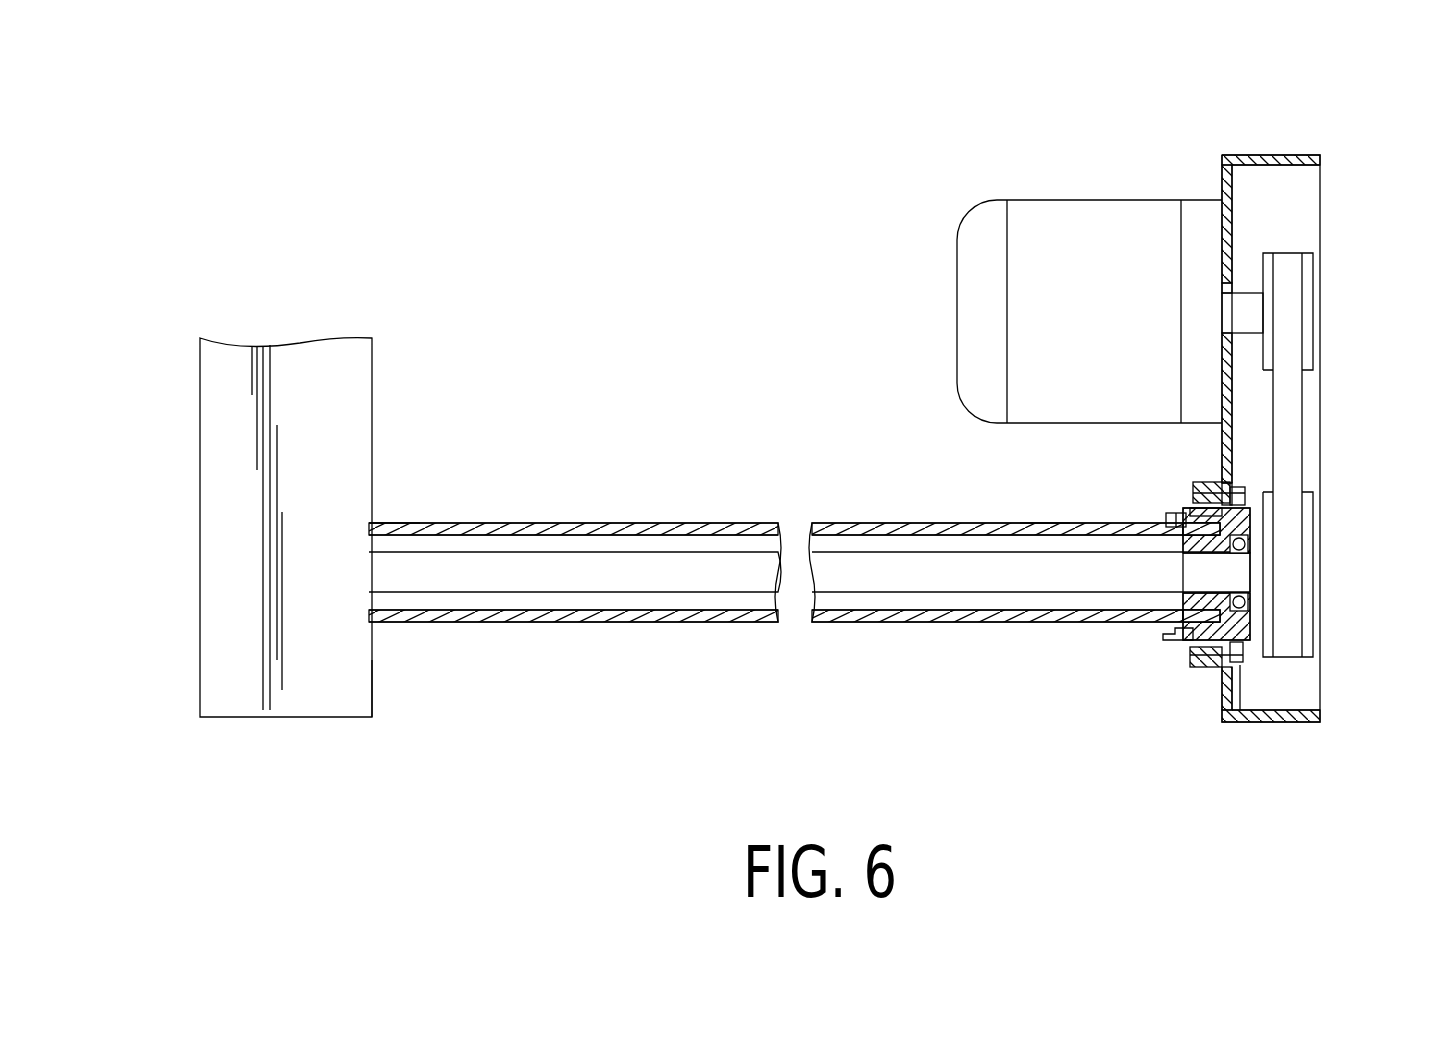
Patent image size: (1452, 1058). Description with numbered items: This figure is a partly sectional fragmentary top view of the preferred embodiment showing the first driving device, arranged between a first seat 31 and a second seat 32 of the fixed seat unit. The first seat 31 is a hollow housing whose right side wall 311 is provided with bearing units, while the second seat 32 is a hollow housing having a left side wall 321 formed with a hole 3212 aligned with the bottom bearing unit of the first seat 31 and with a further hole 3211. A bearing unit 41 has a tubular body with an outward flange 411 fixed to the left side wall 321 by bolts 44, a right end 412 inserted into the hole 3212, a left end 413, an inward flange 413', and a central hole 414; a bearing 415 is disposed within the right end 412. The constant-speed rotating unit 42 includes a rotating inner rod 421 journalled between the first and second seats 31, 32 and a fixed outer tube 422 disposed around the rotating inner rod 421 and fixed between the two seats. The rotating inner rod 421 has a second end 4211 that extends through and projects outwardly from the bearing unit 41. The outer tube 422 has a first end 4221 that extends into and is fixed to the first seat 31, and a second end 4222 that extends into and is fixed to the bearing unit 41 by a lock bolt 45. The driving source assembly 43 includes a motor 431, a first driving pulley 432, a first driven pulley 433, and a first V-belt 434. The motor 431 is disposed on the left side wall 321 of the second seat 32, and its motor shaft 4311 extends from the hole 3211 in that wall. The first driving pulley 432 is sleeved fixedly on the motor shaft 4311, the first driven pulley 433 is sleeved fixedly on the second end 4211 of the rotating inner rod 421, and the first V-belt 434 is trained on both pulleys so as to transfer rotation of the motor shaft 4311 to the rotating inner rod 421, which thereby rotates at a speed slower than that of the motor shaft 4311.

The first seat 31 is at (283, 340).
The right side wall 311 is at (370, 670).
The second seat 32 is at (1297, 155).
The left side wall 321 is at (1233, 197).
The hole 3211 is at (1235, 290).
The hole 3212 is at (1242, 700).
The bearing unit 41 is at (1168, 618).
The outward flange 411 is at (1200, 488).
The right end 412 is at (1243, 650).
The left end 413 is at (1124, 648).
The inward flange 413' is at (1057, 485).
The central hole 414 is at (1207, 667).
The bearing 415 is at (1248, 605).
The constant-speed rotating unit 42 is at (809, 566).
The rotating inner rod 421 is at (718, 580).
The second end 4211 is at (1243, 583).
The fixed outer tube 422 is at (595, 618).
The first end 4221 is at (385, 524).
The second end 4222 is at (1045, 523).
The driving source assembly 43 is at (1037, 200).
The motor 431 is at (1117, 208).
The motor shaft 4311 is at (1250, 297).
The first driving pulley 432 is at (1305, 299).
The first driven pulley 433 is at (1307, 513).
The first V-belt 434 is at (1287, 413).
The bolts 44 is at (1210, 492).
The lock bolt 45 is at (1175, 512).